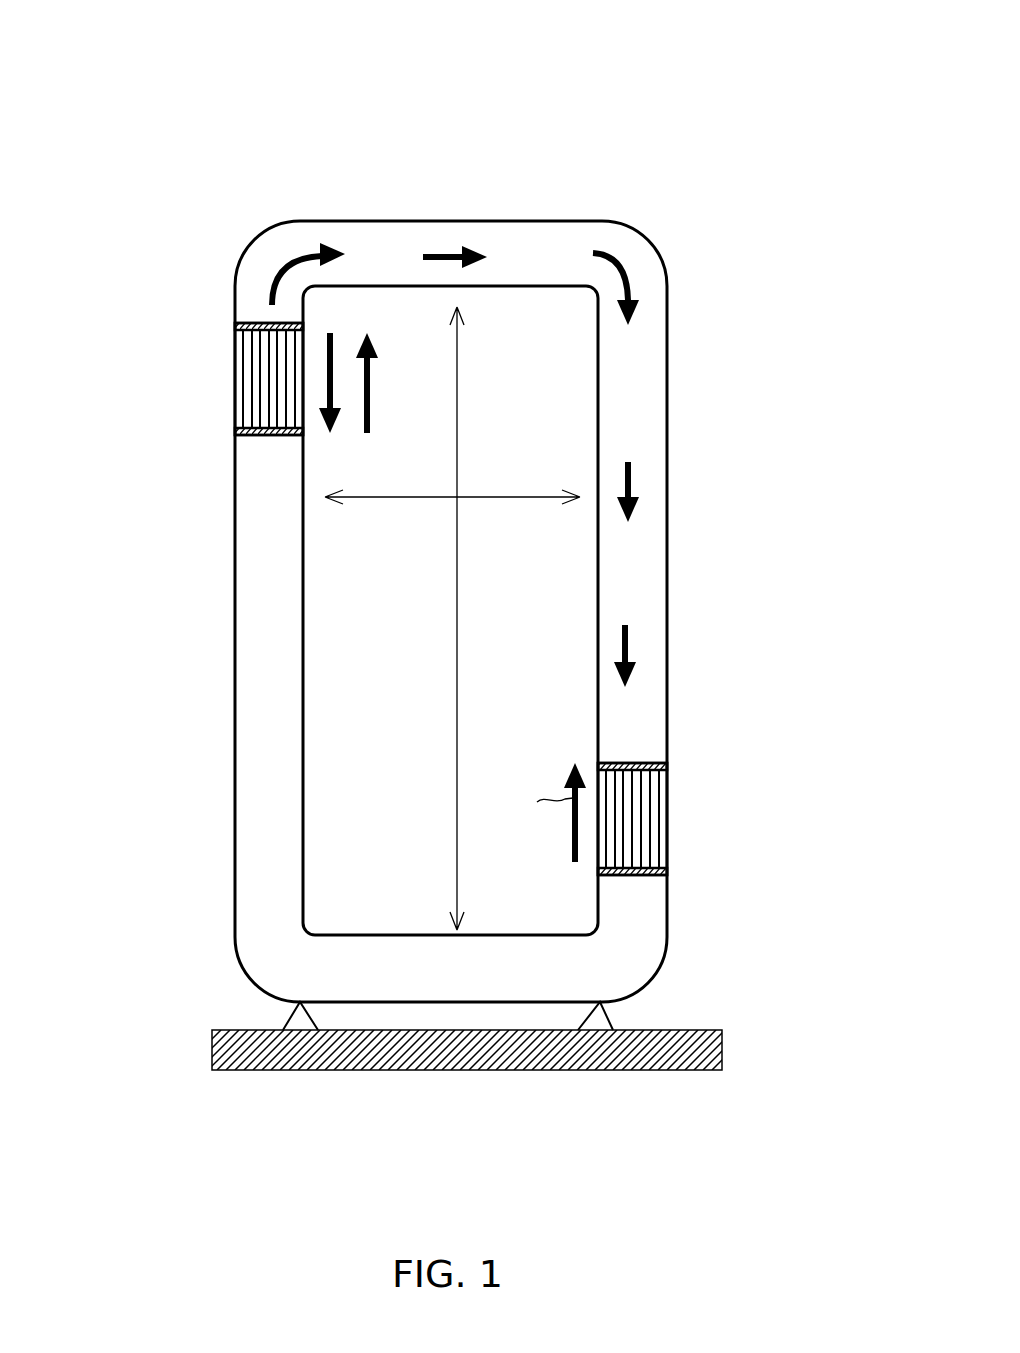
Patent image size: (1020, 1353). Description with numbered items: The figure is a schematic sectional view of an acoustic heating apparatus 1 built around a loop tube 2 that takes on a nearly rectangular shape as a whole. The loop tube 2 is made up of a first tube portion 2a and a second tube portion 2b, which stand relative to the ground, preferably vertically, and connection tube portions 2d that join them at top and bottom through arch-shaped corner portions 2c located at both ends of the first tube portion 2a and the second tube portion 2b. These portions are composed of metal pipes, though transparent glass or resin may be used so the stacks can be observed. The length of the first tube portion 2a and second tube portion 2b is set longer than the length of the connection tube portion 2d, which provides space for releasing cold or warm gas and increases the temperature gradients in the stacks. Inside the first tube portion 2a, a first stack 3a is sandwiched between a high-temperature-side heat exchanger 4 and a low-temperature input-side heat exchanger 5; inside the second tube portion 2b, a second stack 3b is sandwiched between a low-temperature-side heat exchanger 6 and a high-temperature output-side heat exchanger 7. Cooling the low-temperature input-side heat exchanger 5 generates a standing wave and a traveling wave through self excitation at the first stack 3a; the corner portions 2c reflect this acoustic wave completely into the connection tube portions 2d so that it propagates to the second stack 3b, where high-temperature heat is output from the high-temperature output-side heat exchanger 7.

The acoustic heating apparatus 1 is at (545, 148).
The loop tube 2 is at (446, 566).
The first tube portion 2a is at (234, 616).
The second tube portion 2b is at (667, 607).
The corner portions 2c is at (253, 238).
The connection tube portions 2d is at (440, 220).
The first stack 3a is at (201, 377).
The second stack 3b is at (706, 819).
The high-temperature-side heat exchanger 4 is at (235, 323).
The low-temperature input-side heat exchanger 5 is at (235, 435).
The low-temperature-side heat exchanger 6 is at (667, 875).
The high-temperature output-side heat exchanger 7 is at (666, 763).